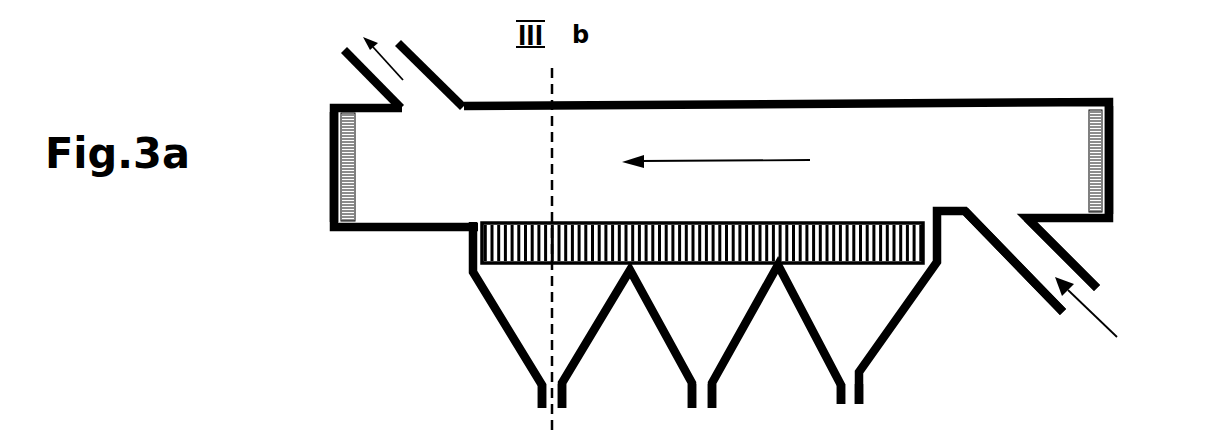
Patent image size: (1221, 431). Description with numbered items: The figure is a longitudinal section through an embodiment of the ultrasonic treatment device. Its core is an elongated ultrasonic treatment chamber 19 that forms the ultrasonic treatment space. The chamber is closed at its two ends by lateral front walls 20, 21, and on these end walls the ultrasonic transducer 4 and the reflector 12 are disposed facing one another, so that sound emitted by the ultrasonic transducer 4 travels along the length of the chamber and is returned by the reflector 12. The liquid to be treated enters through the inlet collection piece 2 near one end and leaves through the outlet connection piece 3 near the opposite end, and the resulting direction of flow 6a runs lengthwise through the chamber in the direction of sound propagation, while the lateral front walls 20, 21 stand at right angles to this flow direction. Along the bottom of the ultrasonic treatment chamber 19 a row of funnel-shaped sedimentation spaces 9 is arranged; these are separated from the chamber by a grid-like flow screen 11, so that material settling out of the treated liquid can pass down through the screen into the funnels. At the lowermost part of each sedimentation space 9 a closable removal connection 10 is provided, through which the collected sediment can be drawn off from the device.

The inlet collection piece 2 is at (1027, 252).
The outlet connection piece 3 is at (425, 90).
The ultrasonic transducer 4 is at (1102, 103).
The direction of flow 6a is at (690, 160).
The funnel-shaped sedimentation spaces 9 is at (537, 328).
The closable removal connections 10 is at (538, 393).
The grid-like flow screen 11 is at (484, 250).
The reflector 12 is at (348, 100).
The ultrasonic treatment chamber 19 is at (863, 135).
The lateral front wall 20 is at (330, 197).
The lateral front wall 21 is at (1113, 187).